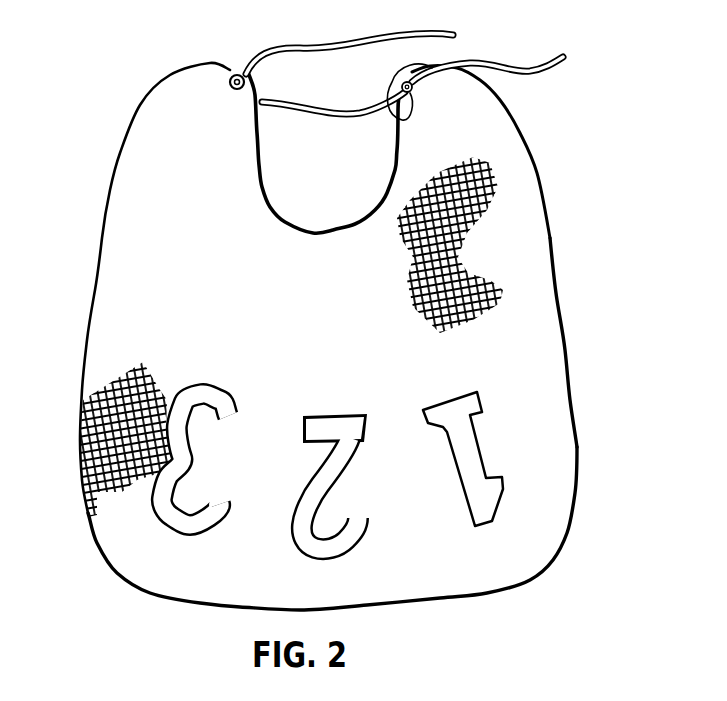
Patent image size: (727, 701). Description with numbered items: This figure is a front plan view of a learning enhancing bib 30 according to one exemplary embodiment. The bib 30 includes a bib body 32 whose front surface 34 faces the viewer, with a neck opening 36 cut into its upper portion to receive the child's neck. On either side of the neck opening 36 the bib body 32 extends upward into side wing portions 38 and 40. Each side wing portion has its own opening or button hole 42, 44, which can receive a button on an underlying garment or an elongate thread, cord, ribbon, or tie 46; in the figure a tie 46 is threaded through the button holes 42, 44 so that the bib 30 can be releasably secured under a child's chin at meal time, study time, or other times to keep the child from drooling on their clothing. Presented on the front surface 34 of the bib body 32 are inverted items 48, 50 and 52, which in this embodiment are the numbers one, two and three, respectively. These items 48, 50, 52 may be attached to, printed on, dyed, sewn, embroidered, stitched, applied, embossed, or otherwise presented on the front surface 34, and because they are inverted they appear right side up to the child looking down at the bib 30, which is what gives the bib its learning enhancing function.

The learning enhancing bib 30 is at (354, 336).
The bib body 32 is at (547, 457).
The front surface 34 is at (533, 317).
The neck opening 36 is at (263, 194).
The side wing portion 38 is at (505, 143).
The side wing portion 40 is at (130, 178).
The button hole 42 is at (396, 122).
The button hole 44 is at (228, 78).
The tie 46 is at (431, 34).
The inverted item 48 is at (500, 500).
The inverted item 50 is at (306, 543).
The inverted item 52 is at (153, 493).